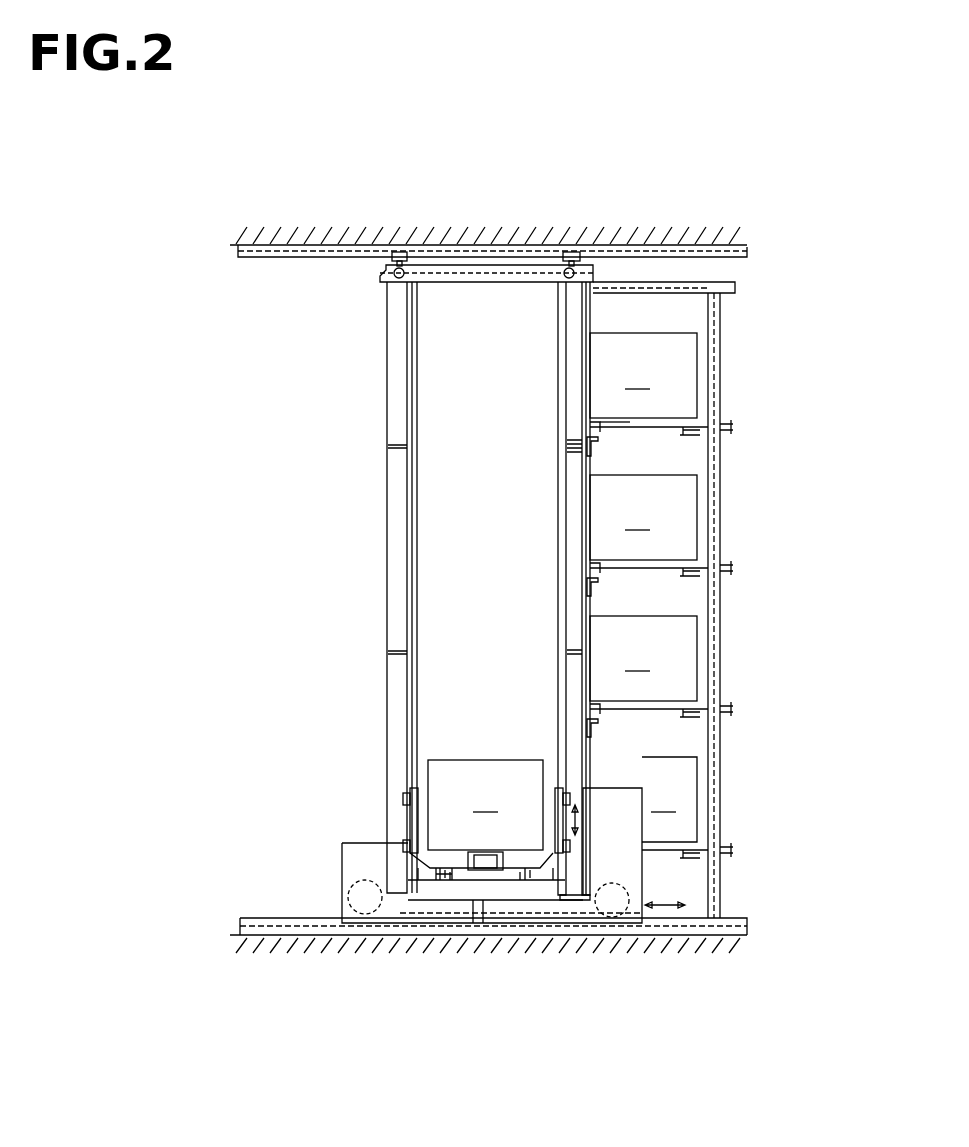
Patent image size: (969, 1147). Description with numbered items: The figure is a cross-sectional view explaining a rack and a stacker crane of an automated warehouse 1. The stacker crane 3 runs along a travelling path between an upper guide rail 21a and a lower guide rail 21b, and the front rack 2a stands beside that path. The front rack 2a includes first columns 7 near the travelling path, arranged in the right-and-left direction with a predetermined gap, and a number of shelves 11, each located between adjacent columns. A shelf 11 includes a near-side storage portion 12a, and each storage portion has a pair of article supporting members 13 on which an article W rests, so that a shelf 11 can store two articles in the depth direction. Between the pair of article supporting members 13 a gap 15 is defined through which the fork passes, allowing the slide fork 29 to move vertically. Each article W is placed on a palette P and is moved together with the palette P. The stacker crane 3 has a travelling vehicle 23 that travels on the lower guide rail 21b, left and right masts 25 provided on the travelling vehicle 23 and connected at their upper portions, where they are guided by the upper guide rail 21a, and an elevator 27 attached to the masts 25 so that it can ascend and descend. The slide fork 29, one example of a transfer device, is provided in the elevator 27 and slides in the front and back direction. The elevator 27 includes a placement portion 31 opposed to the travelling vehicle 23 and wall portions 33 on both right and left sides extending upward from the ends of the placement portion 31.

The article transport facility 1 is at (322, 368).
The front rack 2a is at (727, 350).
The stacker crane 3 is at (380, 515).
The first columns 7 is at (707, 308).
The shelves 11 is at (628, 421).
The near-side storage portion 12a is at (699, 419).
The article supporting members 13 is at (587, 458).
The gap 15 is at (641, 434).
The upper guide rail 21a is at (364, 259).
The lower guide rail 21b is at (273, 917).
The travelling vehicle 23 is at (587, 912).
The mast 25 is at (387, 552).
The elevator 27 is at (537, 873).
The slide fork 29 is at (486, 870).
The placement portion 31 is at (443, 878).
The wall portions 33 is at (413, 805).
The palette P is at (440, 848).